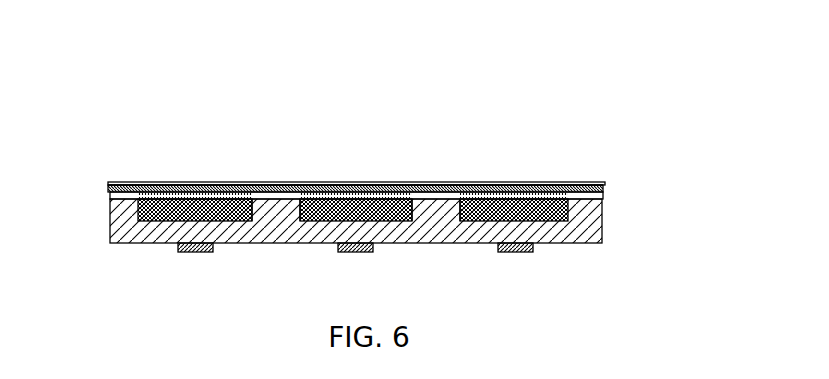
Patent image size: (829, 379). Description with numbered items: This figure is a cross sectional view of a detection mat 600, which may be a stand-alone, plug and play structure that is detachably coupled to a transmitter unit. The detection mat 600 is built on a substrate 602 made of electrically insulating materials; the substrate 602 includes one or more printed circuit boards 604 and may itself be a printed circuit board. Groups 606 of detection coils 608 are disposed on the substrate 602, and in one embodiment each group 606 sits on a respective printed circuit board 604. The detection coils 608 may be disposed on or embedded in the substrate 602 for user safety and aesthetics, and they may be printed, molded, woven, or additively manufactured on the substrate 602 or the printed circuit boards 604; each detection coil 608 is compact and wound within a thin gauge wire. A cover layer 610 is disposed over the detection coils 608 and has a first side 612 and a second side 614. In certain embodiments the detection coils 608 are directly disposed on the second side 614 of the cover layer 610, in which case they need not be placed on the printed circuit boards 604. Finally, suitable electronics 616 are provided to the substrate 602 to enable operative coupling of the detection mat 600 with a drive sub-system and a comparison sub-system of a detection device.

The detection mat 600 is at (562, 73).
The substrate 602 is at (603, 225).
The printed circuit boards 604 is at (287, 218).
The groups of detection coils 606 is at (247, 197).
The detection coils 608 is at (136, 194).
The cover layer 610 is at (413, 184).
The first side 612 is at (582, 185).
The second side 614 is at (604, 190).
The electronics 616 is at (367, 252).